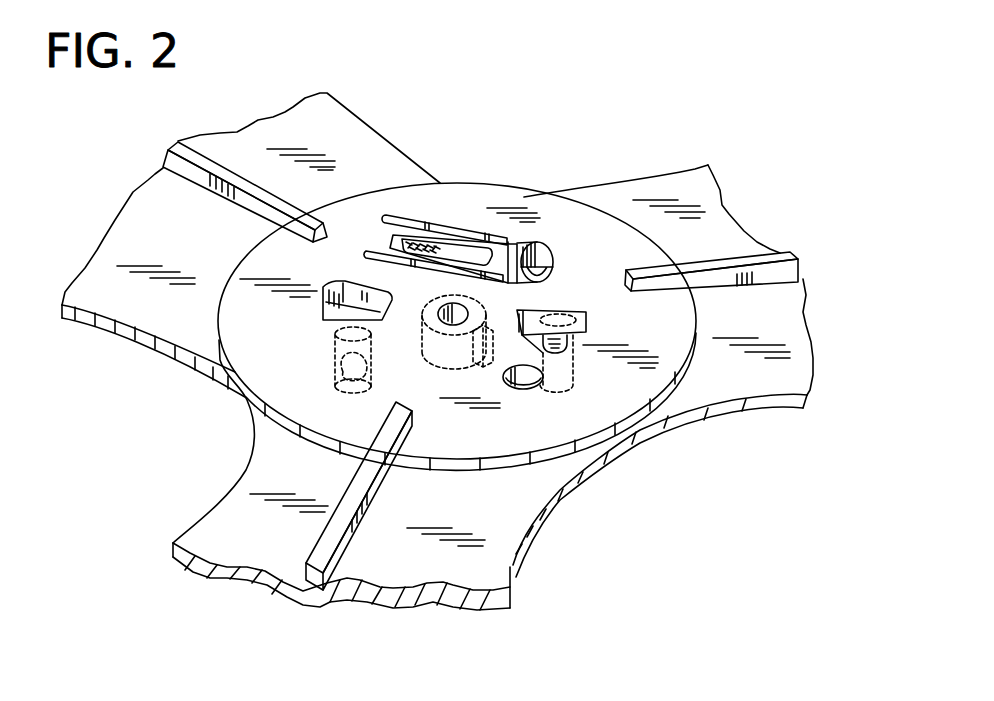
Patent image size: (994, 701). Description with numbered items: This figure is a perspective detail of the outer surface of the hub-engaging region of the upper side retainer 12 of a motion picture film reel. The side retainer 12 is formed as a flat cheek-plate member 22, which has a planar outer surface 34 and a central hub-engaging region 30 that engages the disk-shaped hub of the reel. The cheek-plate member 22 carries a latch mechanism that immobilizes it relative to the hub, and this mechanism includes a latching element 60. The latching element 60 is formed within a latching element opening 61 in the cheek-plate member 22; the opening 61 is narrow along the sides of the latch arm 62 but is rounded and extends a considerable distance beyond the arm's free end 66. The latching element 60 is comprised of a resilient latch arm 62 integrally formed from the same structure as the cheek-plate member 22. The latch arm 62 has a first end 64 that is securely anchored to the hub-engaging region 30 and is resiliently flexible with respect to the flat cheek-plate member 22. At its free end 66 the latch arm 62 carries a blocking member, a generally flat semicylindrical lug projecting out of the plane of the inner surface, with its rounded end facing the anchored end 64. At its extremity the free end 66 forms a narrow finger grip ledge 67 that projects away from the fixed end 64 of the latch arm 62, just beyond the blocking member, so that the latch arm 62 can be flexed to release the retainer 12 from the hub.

The side retainer 12 is at (592, 90).
The cheek-plate member 22 is at (272, 366).
The hub-engaging region 30 is at (594, 223).
The outer surface 34 is at (440, 187).
The latching element 60 is at (500, 248).
The latching element opening 61 is at (552, 268).
The latch arm 62 is at (460, 233).
The first end 64 is at (373, 234).
The free end 66 is at (523, 229).
The finger grip ledge 67 is at (532, 242).